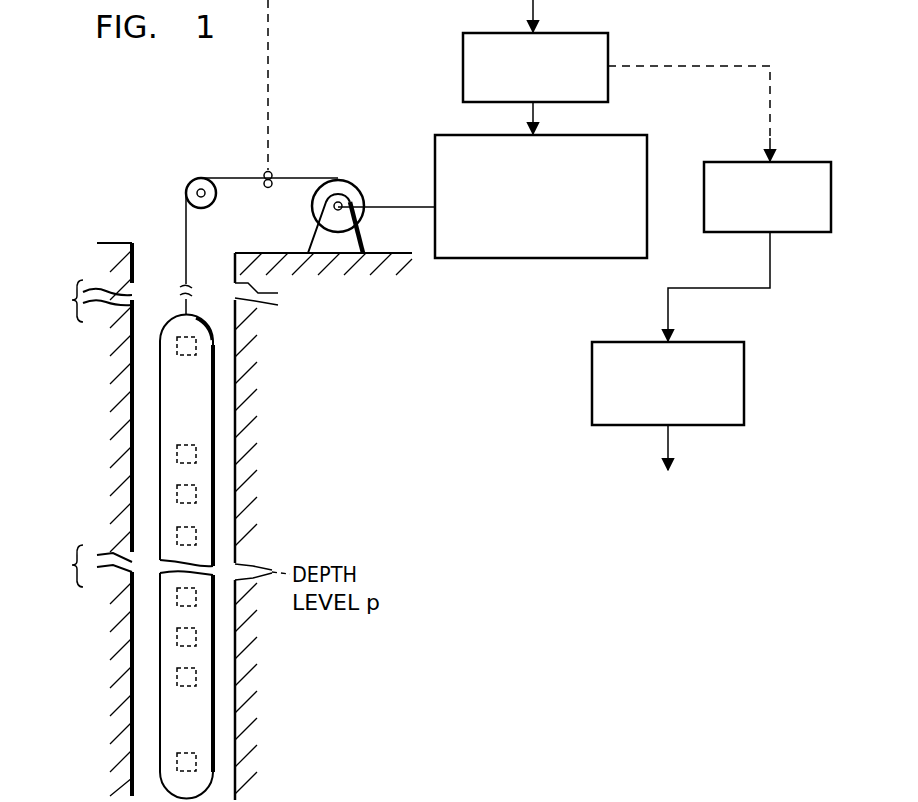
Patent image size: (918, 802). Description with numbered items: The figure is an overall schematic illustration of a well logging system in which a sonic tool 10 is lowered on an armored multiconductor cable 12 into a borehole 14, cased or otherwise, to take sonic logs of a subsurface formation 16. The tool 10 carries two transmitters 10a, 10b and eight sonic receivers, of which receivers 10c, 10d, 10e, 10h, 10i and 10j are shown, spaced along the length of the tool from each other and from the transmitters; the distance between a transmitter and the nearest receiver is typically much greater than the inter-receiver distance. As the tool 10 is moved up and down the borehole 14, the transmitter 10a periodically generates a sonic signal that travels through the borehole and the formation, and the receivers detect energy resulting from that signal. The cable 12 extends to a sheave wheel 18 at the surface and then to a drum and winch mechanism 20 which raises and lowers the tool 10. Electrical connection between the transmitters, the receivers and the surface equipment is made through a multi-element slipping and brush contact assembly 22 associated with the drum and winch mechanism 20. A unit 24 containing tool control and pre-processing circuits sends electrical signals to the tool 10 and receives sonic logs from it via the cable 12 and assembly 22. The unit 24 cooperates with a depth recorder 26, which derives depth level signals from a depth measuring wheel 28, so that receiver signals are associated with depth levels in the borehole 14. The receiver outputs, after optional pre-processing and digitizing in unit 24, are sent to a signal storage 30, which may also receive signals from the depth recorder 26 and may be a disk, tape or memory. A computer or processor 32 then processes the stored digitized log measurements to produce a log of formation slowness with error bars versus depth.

The sonic tool 10 is at (197, 381).
The transmitter 10a is at (191, 770).
The transmitter 10b is at (197, 345).
The sonic receiver 10c is at (197, 454).
The sonic receiver 10d is at (197, 494).
The sonic receiver 10e is at (197, 535).
The sonic receiver 10h is at (197, 603).
The sonic receiver 10i is at (197, 643).
The sonic receiver 10j is at (197, 683).
The armored multiconductor cable 12 is at (186, 262).
The borehole 14 is at (229, 396).
The subsurface formation 16 is at (410, 424).
The sheave wheel 18 is at (193, 179).
The drum and winch mechanism 20 is at (352, 184).
The multi-element slipping and brush contact assembly 22 is at (348, 240).
The unit 24 is at (624, 135).
The depth recorder 26 is at (463, 42).
The depth measuring wheel 28 is at (274, 176).
The signal storage 30 is at (810, 162).
The computer or processor 32 is at (746, 378).